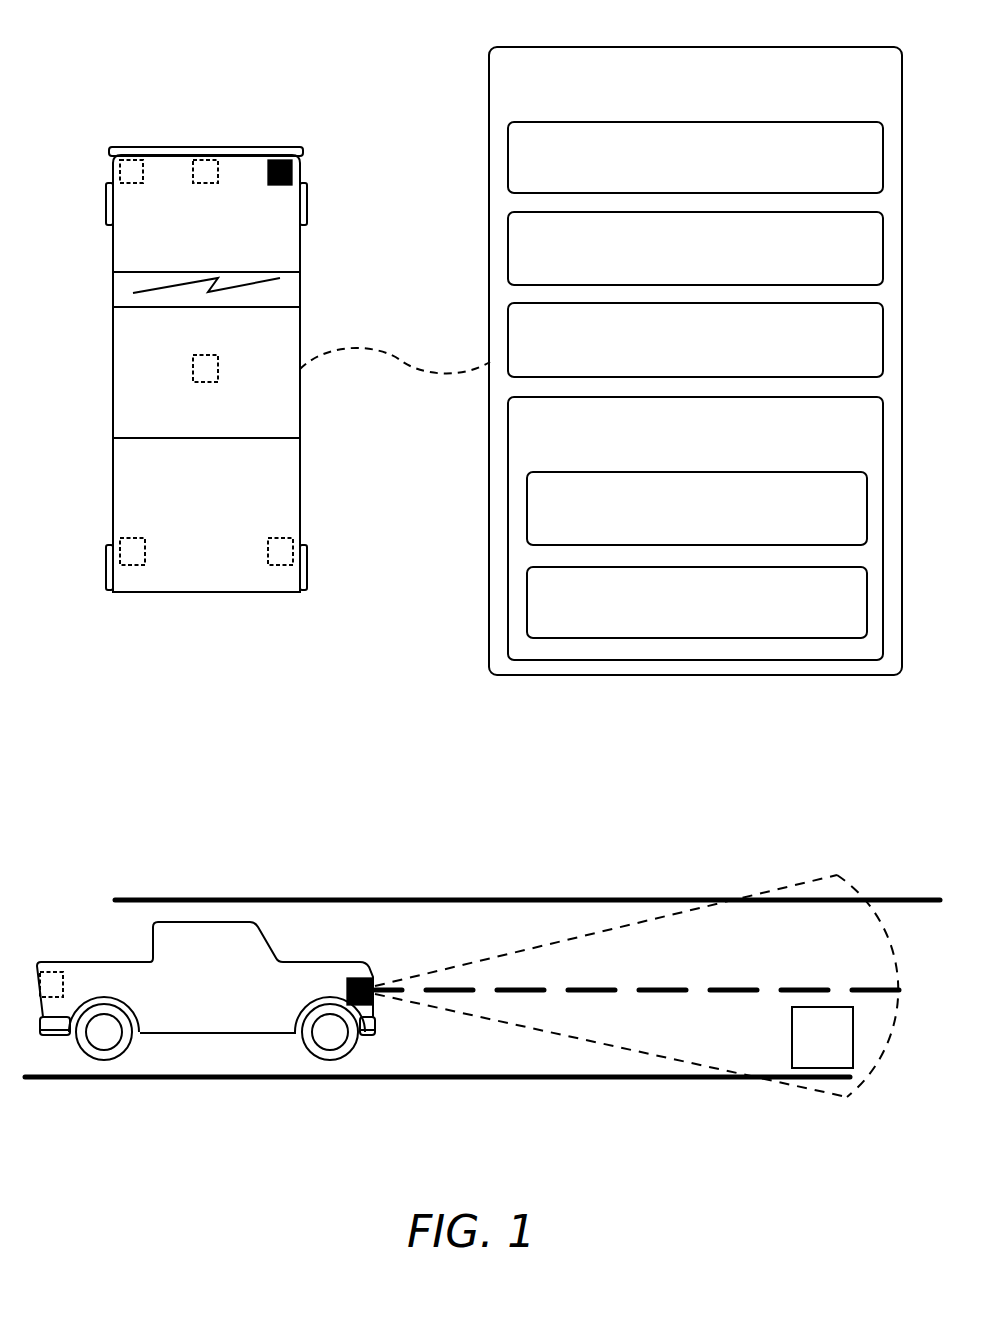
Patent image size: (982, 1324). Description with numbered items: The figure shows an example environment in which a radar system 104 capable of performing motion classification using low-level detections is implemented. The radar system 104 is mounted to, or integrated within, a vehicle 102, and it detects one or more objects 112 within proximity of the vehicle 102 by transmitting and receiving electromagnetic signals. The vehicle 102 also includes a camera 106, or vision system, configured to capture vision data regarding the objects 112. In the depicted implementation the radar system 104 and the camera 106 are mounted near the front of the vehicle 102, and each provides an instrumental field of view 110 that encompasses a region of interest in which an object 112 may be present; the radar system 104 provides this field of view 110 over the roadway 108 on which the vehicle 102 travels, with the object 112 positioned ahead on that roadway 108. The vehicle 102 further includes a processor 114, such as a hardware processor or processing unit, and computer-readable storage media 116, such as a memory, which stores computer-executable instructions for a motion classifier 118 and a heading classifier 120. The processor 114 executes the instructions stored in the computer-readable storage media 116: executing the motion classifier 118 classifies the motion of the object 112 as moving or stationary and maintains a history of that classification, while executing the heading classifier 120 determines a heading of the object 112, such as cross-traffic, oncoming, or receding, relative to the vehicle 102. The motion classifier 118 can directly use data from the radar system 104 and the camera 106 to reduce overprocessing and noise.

The vehicle 102 is at (177, 630).
The radar system 104 is at (283, 162).
The camera 106 is at (205, 165).
The roadway 108 is at (552, 898).
The field of view 110 is at (792, 1088).
The object 112 is at (822, 1007).
The processor 114 is at (695, 340).
The computer-readable storage media 116 is at (695, 528).
The motion classifier 118 is at (697, 508).
The heading classifier 120 is at (697, 602).